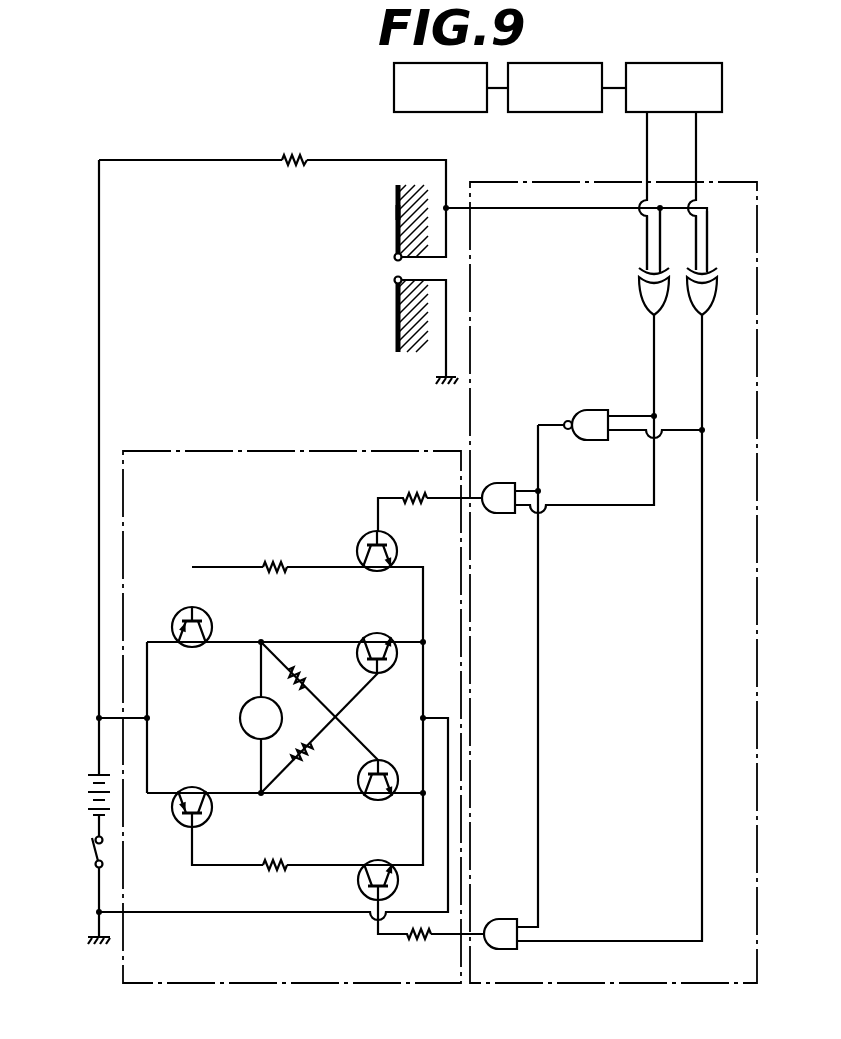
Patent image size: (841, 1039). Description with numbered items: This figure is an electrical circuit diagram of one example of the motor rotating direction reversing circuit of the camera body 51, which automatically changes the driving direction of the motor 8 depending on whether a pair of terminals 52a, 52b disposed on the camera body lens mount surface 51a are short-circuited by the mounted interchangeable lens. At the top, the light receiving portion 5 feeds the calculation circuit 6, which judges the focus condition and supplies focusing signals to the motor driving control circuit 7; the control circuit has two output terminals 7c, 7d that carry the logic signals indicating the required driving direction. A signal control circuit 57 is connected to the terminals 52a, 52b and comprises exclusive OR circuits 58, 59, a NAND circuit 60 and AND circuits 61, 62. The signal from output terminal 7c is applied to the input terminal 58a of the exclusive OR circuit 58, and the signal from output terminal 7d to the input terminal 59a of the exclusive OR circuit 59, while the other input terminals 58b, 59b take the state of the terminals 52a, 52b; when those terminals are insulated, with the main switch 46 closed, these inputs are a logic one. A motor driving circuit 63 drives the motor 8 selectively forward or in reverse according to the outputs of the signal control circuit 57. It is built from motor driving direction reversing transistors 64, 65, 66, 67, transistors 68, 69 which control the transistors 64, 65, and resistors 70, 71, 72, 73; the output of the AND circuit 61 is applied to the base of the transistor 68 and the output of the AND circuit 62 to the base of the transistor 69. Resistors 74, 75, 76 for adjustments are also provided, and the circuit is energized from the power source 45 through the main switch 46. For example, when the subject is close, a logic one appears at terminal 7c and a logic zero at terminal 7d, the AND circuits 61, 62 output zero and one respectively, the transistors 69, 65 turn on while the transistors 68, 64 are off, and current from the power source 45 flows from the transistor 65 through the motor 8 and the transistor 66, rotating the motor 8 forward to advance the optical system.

The light receiving portion 5 is at (432, 103).
The calculation circuit 6 is at (547, 103).
The motor driving control circuit 7 is at (666, 103).
The output terminal 7c is at (646, 136).
The output terminal 7d is at (697, 136).
The motor 8 is at (253, 733).
The power source 45 is at (87, 790).
The main switch 46 is at (90, 851).
The camera body 51 is at (391, 190).
The camera body lens mount surface 51a is at (397, 211).
The terminal 52a is at (396, 282).
The terminal 52b is at (395, 257).
The signal control circuit 57 is at (528, 181).
The exclusive OR circuit 58 is at (638, 292).
The input terminal 58a is at (645, 252).
The input terminal 58b is at (658, 228).
The exclusive OR circuit 59 is at (716, 300).
The input terminal 59a is at (698, 256).
The input terminal 59b is at (709, 213).
The NAND circuit 60 is at (590, 410).
The AND circuit 61 is at (500, 483).
The AND circuit 62 is at (506, 920).
The motor driving circuit 63 is at (236, 451).
The motor driving direction reversing transistor 64 is at (208, 613).
The motor driving direction reversing transistor 65 is at (212, 816).
The motor driving direction reversing transistor 66 is at (370, 635).
The motor driving direction reversing transistor 67 is at (386, 760).
The transistor 68 is at (362, 540).
The transistor 69 is at (372, 862).
The resistor 70 is at (276, 563).
The resistor 71 is at (285, 868).
The resistor 72 is at (419, 494).
The resistor 73 is at (412, 938).
The resistor 74 is at (306, 157).
The resistor 75 is at (300, 685).
The resistor 76 is at (306, 755).